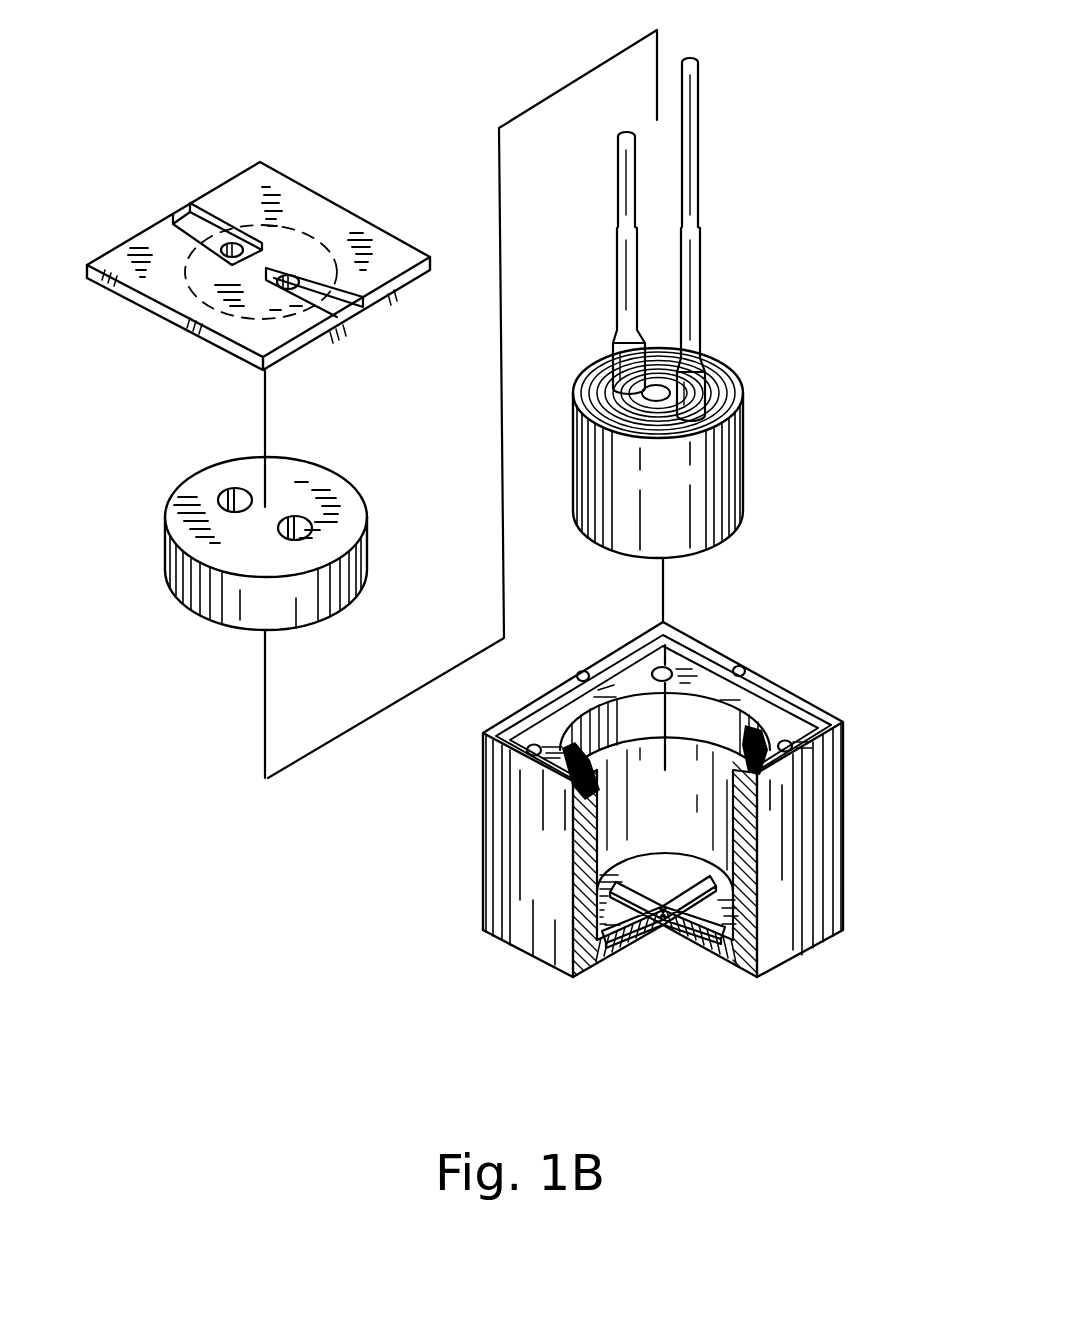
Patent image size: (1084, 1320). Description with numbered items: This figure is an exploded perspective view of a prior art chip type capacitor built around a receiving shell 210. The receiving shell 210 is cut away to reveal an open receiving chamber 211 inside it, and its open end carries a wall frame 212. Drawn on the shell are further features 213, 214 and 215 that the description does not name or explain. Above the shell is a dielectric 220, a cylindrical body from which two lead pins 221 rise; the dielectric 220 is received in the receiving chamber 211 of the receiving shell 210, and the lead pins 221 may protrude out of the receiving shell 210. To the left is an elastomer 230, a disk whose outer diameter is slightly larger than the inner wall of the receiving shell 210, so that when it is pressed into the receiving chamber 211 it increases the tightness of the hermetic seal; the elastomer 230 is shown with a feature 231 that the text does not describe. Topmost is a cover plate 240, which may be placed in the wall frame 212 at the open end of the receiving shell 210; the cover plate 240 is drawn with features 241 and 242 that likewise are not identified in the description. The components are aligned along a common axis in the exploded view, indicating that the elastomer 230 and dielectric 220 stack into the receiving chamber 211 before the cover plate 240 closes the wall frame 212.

The receiving shell 210 is at (772, 940).
The receiving chamber 211 is at (698, 752).
The wall frame 212 is at (641, 639).
The hole 213 is at (668, 671).
The projection 214 is at (582, 677).
The cross-shaped support 215 is at (650, 937).
The dielectric 220 is at (743, 440).
The lead pins 221 is at (692, 278).
The elastomer 230 is at (367, 572).
The pin hole 231 is at (300, 522).
The cover plate 240 is at (390, 247).
The hole 241 is at (289, 272).
The slot 242 is at (353, 310).